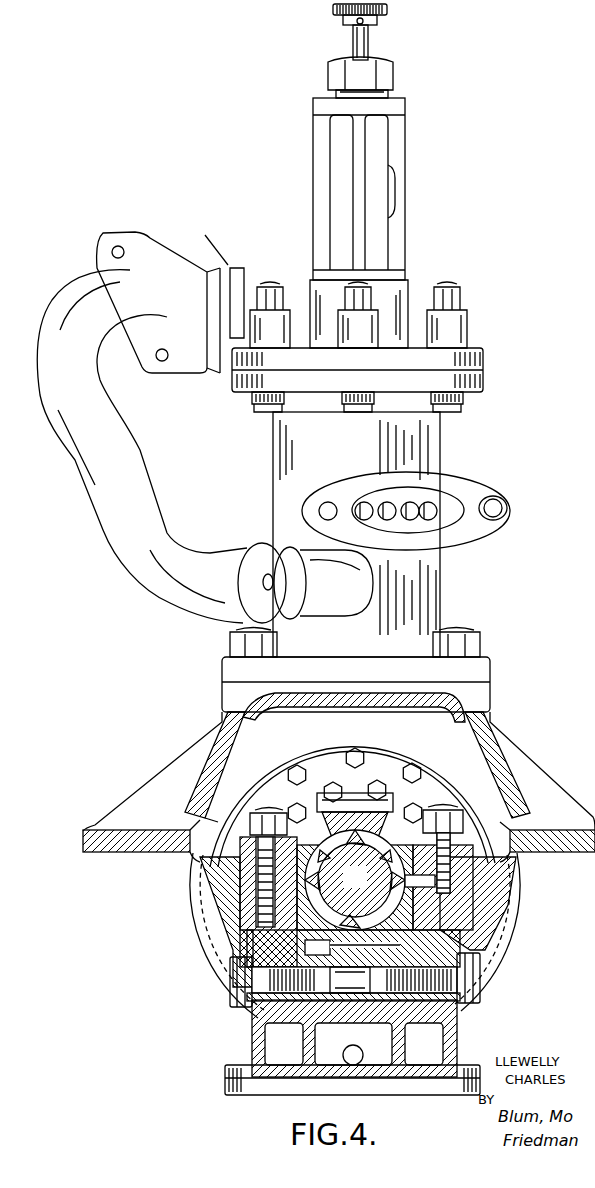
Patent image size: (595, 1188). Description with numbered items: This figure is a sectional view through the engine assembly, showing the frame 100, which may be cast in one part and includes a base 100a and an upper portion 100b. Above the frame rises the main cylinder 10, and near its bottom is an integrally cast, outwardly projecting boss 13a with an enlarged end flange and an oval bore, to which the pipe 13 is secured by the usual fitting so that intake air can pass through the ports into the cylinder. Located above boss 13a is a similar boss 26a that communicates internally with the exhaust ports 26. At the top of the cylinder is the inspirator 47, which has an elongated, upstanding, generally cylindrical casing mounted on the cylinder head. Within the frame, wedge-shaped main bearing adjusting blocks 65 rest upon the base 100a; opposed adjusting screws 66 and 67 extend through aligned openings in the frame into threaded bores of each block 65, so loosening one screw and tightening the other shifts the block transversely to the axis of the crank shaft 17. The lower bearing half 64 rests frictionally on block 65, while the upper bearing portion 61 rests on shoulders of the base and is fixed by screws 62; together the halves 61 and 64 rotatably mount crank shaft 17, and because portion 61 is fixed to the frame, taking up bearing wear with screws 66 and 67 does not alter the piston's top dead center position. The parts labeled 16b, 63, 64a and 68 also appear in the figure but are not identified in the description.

The inspirator 47 is at (375, 175).
The main cylinder 10 is at (428, 442).
The exhaust ports 26 is at (413, 507).
The exhaust boss 26a is at (477, 490).
The pipe 13 is at (167, 535).
The boss 13a is at (337, 588).
The frame 100 is at (512, 730).
The base 100a is at (447, 1043).
The upper portion 100b is at (522, 758).
The round housing wall 16b is at (480, 907).
The crank shaft 17 is at (366, 888).
The upper bearing portion 61 is at (310, 807).
The screws 62 is at (413, 820).
The clamp member 63 is at (430, 883).
The lower bearing half 64 is at (460, 953).
The left clamp block 64a is at (310, 858).
The main bearing adjusting block 65 is at (457, 1020).
The adjusting screw 66 is at (237, 980).
The adjusting screw 67 is at (467, 977).
The connecting link 68 is at (307, 953).